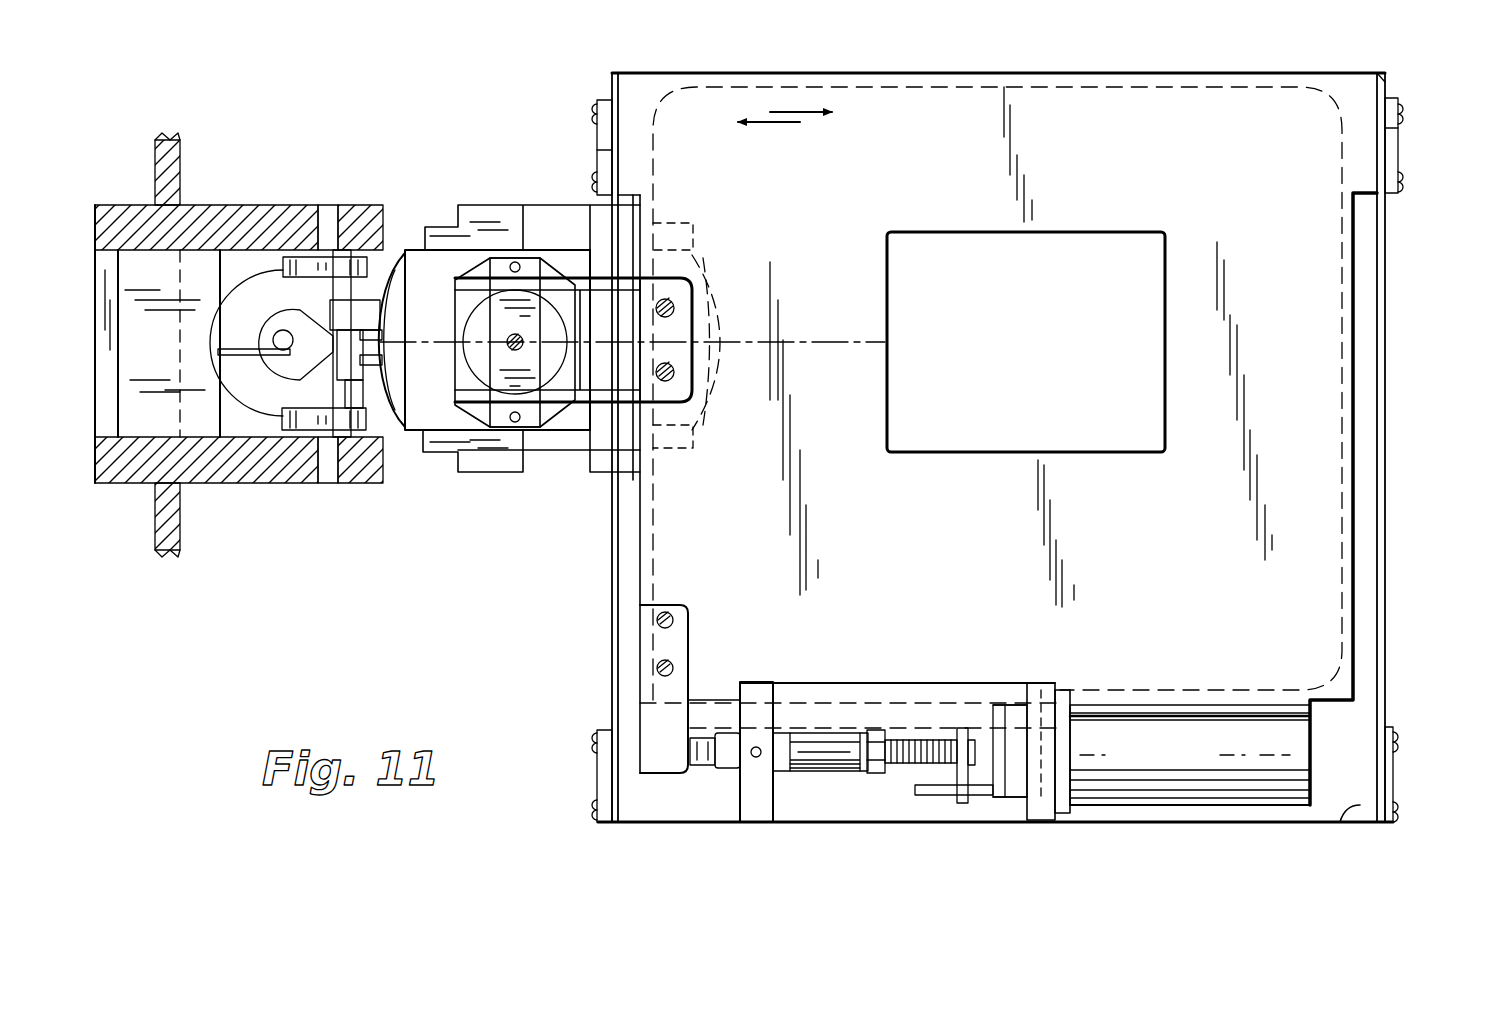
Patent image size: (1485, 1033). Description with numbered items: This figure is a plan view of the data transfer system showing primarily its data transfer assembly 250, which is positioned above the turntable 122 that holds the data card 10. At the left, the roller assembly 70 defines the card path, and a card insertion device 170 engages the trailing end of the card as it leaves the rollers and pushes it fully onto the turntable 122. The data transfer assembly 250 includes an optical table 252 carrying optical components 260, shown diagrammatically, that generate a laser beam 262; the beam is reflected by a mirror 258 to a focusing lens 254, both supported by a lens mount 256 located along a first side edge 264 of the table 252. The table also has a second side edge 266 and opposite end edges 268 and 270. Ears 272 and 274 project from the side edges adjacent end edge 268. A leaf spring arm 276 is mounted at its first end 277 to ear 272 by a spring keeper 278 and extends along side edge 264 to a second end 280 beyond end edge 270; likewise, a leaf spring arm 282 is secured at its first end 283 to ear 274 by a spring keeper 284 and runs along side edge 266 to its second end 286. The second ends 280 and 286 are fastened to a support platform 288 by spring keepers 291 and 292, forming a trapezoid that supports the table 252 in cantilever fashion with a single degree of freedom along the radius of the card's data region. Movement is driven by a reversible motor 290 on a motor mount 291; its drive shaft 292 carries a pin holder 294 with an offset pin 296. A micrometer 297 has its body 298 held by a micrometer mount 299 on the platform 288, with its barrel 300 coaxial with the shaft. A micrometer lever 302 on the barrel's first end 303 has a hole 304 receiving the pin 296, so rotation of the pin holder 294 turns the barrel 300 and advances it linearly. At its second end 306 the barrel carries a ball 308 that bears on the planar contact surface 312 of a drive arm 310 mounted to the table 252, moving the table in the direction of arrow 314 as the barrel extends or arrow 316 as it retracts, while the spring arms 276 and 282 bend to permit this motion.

The data card 10 is at (509, 338).
The roller assembly 70 is at (286, 452).
The turntable 122 is at (438, 452).
The card insertion device 170 is at (300, 298).
The data transfer assembly 250 is at (570, 568).
The optical table 252 is at (1032, 347).
The laser beam focusing lens 254 is at (556, 420).
The lens mount 256 is at (680, 270).
The mirror 258 is at (458, 330).
The optical components 260 is at (1026, 342).
The laser beam 262 is at (797, 334).
The first side edge 264 is at (642, 482).
The second side edge 266 is at (1342, 388).
The end edge 268 is at (896, 88).
The end edge 270 is at (1335, 690).
The ear 272 is at (642, 86).
The ear 274 is at (1368, 88).
The leaf spring arm 276 is at (606, 574).
The first end 277 is at (597, 126).
The spring keeper 278 is at (597, 152).
The second end 280 is at (618, 824).
The leaf spring arm 282 is at (1382, 500).
The first end 283 is at (1400, 128).
The spring keeper 284 is at (1395, 147).
The second end 286 is at (1370, 806).
The support platform 288 is at (1168, 820).
The reversible motor 290 is at (1190, 755).
The spring keeper / motor mount 291 is at (597, 790).
The spring keeper / drive shaft 292 is at (1402, 772).
The pin holder 294 is at (1032, 806).
The pin 296 is at (990, 800).
The micrometer 297 is at (814, 778).
The micrometer body 298 is at (822, 748).
The micrometer mount 299 is at (760, 684).
The micrometer barrel 300 is at (920, 740).
The micrometer lever 302 is at (948, 796).
The first end 303 is at (1000, 718).
The hole 304 is at (962, 806).
The second end 306 is at (702, 766).
The ball 308 is at (724, 768).
The drive arm 310 is at (690, 650).
The planar contact surface 312 is at (700, 730).
The arrow 314 is at (768, 126).
The arrow 316 is at (808, 104).